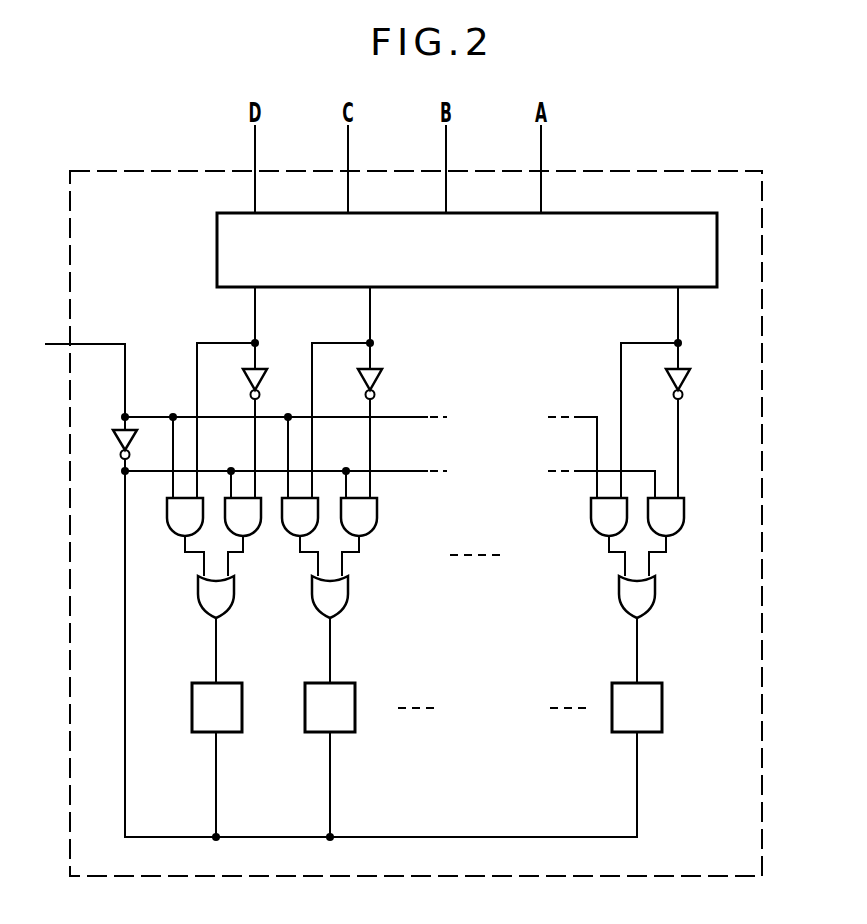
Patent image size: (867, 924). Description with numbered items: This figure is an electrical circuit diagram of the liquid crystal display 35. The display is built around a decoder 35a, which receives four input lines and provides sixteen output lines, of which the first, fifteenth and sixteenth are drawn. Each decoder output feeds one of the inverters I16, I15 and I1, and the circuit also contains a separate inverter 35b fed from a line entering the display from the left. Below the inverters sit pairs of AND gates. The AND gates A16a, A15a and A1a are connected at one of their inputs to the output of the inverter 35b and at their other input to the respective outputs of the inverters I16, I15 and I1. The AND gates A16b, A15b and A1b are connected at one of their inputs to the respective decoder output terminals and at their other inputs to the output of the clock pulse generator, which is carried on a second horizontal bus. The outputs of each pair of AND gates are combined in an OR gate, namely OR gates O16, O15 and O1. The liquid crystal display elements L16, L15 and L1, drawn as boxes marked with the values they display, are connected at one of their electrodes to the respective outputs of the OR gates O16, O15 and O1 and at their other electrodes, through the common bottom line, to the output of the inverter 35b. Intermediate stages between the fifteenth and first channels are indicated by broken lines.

The liquid crystal display 35 is at (649, 171).
The decoder 35a is at (657, 213).
The inverter 35b is at (113, 440).
The inverter I16 is at (261, 378).
The inverter I15 is at (376, 378).
The inverter I1 is at (684, 378).
The AND gate A16b is at (167, 515).
The AND gate A16a is at (257, 538).
The AND gate A15b is at (286, 535).
The AND gate A15a is at (377, 512).
The AND gate A1b is at (591, 515).
The AND gate A1a is at (684, 515).
The OR gate O16 is at (198, 595).
The OR gate O15 is at (348, 594).
The OR gate O1 is at (655, 594).
The liquid crystal display element L16 is at (232, 683).
The liquid crystal display element L15 is at (346, 683).
The liquid crystal display element L1 is at (650, 683).